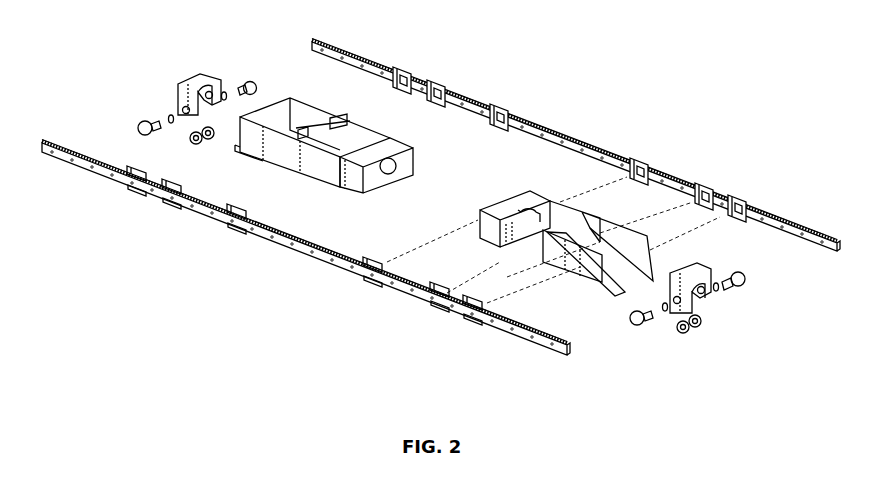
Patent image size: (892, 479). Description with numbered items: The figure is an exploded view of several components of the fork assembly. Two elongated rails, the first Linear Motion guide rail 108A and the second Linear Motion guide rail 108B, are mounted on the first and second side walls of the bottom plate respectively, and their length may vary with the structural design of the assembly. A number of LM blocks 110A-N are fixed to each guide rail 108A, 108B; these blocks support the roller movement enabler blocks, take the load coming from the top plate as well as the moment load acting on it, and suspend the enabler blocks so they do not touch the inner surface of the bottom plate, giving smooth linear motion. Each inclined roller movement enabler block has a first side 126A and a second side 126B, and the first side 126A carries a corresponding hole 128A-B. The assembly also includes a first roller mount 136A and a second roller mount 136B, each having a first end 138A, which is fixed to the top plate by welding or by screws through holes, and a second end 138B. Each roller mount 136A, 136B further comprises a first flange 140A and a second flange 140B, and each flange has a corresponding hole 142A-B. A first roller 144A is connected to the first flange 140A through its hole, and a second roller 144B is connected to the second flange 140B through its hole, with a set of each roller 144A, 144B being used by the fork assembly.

The first Linear Motion (LM) guide rail 108A is at (398, 290).
The second Linear Motion (LM) guide rail 108B is at (478, 100).
The LM blocks 110A-N is at (700, 185).
The first side 126A is at (290, 102).
The second side 126B is at (387, 145).
The holes 128A-B is at (530, 218).
The first roller mount 136A is at (693, 278).
The second roller mount 136B is at (182, 80).
The first end 138A is at (180, 107).
The second end 138B is at (200, 77).
The first flange 140A is at (666, 308).
The second flange 140B is at (708, 295).
The holes 142A-B is at (703, 296).
The first roller 144A is at (635, 322).
The second roller 144B is at (747, 277).